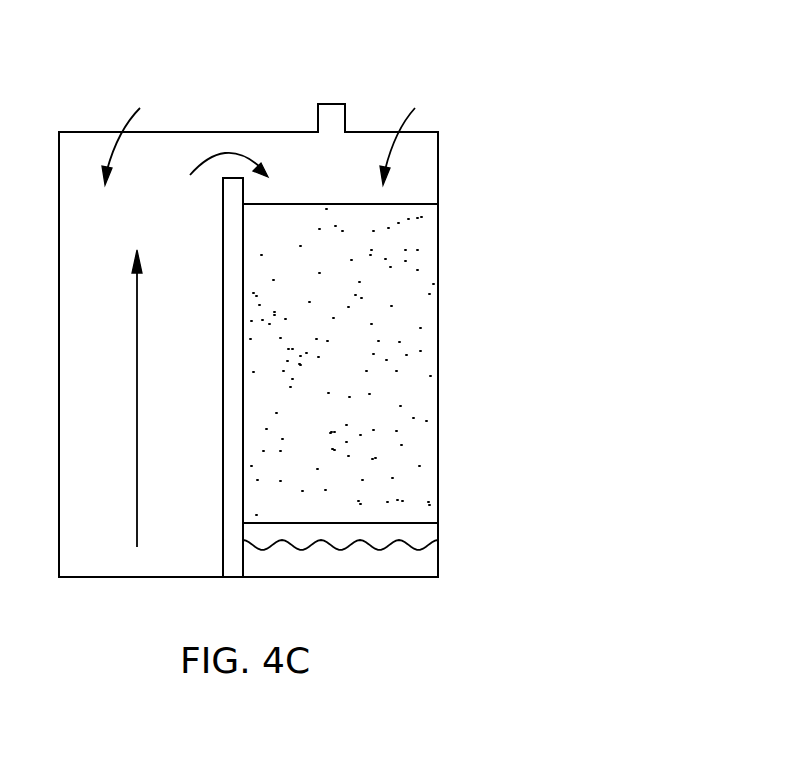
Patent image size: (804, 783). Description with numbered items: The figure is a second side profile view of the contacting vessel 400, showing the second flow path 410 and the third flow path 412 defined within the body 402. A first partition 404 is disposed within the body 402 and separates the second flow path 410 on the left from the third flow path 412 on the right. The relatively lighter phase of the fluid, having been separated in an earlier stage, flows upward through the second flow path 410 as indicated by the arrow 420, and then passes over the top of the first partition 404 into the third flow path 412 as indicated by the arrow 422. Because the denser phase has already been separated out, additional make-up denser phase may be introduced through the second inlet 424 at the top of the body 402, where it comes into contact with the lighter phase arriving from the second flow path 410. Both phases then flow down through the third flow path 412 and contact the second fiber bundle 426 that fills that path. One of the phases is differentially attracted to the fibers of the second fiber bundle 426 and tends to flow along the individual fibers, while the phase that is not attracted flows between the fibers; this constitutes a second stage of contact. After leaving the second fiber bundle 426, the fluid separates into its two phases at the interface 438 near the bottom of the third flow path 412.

The contacting vessel 400 is at (533, 66).
The body 402 is at (440, 175).
The first partition 404 is at (235, 568).
The second flow path 410 is at (147, 139).
The third flow path 412 is at (424, 139).
The arrow 420 is at (137, 403).
The arrow 422 is at (228, 148).
The second inlet 424 is at (337, 103).
The second fiber bundle 426 is at (413, 293).
The interface 438 is at (433, 545).